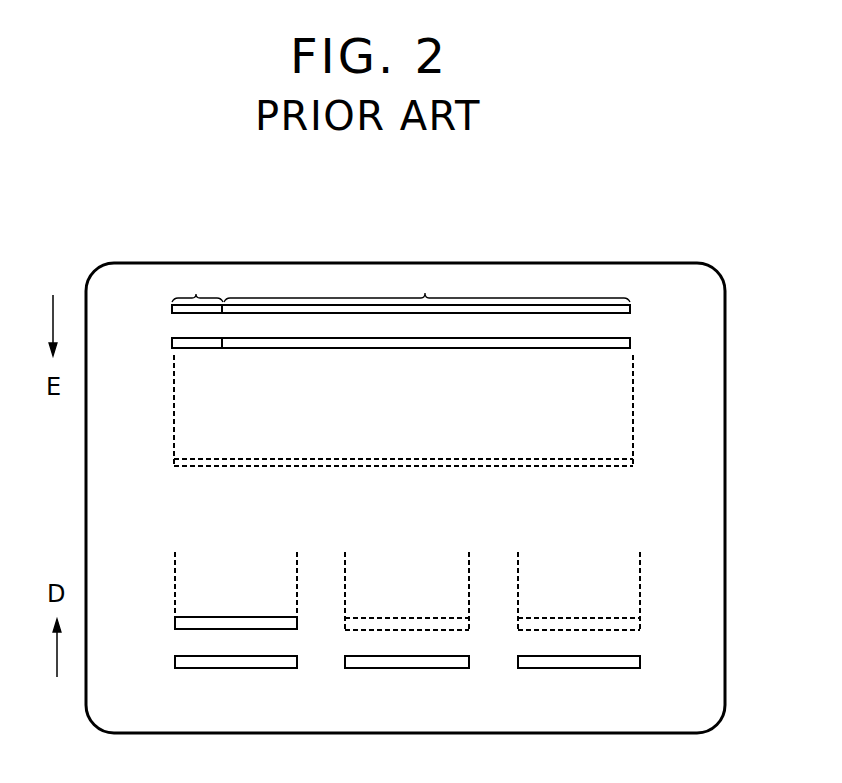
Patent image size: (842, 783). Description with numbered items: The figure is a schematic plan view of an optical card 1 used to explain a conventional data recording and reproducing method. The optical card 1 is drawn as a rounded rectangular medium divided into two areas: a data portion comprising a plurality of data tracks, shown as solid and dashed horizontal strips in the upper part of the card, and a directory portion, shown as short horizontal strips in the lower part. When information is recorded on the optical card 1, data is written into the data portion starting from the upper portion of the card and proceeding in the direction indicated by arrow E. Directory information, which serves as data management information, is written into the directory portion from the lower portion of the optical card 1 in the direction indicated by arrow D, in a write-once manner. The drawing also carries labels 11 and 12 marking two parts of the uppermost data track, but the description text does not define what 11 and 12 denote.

The optical card 1 is at (727, 660).
The first portion of first data line 11 is at (196, 293).
The second portion of first data line 12 is at (425, 293).